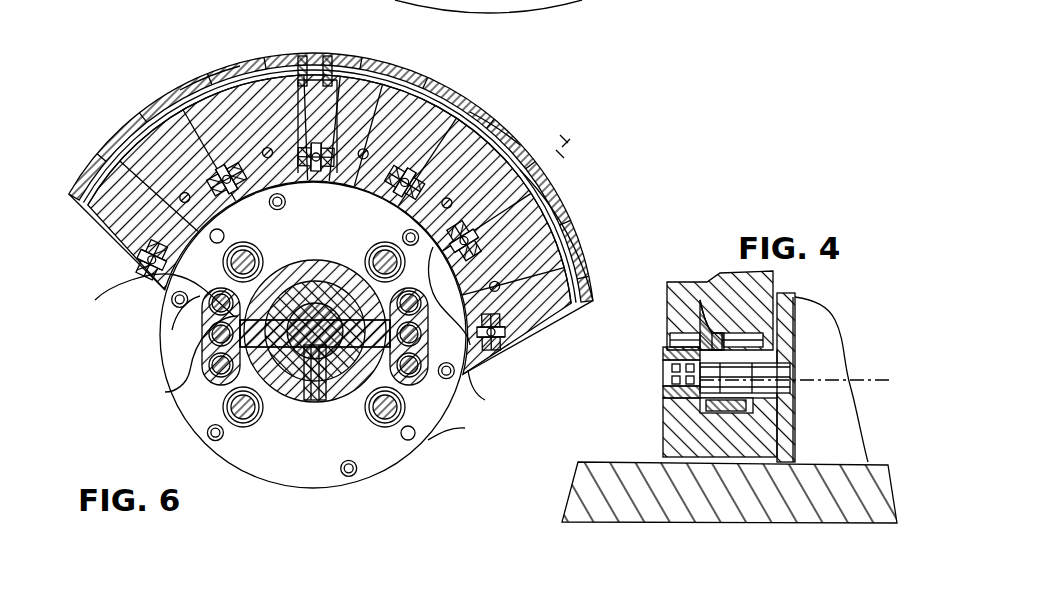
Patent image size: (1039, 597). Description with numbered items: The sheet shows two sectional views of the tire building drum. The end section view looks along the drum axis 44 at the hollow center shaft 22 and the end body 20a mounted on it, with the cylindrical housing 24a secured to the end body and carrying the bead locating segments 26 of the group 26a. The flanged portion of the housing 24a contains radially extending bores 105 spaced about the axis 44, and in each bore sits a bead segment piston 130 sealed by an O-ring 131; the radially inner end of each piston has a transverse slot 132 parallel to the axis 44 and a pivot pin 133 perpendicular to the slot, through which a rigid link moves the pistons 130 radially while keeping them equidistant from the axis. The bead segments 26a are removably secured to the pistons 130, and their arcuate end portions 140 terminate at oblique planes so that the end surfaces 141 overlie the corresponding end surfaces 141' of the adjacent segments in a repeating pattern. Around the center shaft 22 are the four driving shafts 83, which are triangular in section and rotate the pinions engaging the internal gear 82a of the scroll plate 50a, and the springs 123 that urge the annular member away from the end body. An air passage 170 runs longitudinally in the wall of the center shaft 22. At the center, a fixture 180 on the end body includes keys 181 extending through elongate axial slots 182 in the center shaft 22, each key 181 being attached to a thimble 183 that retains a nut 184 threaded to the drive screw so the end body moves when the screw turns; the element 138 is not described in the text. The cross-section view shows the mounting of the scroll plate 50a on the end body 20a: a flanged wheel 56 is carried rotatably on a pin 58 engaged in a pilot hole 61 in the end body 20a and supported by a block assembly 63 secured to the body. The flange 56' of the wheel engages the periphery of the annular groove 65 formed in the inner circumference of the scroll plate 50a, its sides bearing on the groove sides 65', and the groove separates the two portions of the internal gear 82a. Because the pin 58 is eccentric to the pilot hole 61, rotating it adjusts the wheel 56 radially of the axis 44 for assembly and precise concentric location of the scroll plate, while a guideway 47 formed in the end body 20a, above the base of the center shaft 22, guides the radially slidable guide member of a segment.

In FIG. 6, the end body 20a is at (187, 397).
In FIG. 4, the end body 20a is at (795, 417).
In FIG. 6, the center shaft 22 is at (282, 252).
In FIG. 4, the center shaft 22 is at (670, 507).
In FIG. 6, the cylindrical housing 24a is at (150, 182).
In FIG. 6, the bead locating segments 26 is at (555, 195).
In FIG. 6, the group of bead engaging and locating segments 26a is at (118, 165).
In FIG. 6, the drum axis 44 is at (313, 380).
In FIG. 4, the guideway 47 is at (842, 432).
In FIG. 4, the scroll plate 50a is at (758, 287).
In FIG. 4, the flanged wheel 56 is at (678, 286).
In FIG. 4, the flange 56' is at (666, 292).
In FIG. 4, the pin 58 is at (717, 373).
In FIG. 4, the pilot hole 61 is at (795, 338).
In FIG. 4, the block assembly 63 is at (753, 442).
In FIG. 4, the annular groove 65 is at (709, 278).
In FIG. 4, the sides of the groove 65' is at (752, 315).
In FIG. 4, the internal gear 82a is at (668, 343).
In FIG. 6, the driving shaft 83 is at (232, 268).
In FIG. 6, the radial bore 105 is at (102, 162).
In FIG. 6, the spring 123 is at (172, 304).
In FIG. 6, the bead segment piston 130 is at (172, 165).
In FIG. 6, the O-ring 131 is at (520, 145).
In FIG. 6, the transverse slot 132 is at (133, 235).
In FIG. 6, the pivot pin 133 is at (157, 263).
In FIG. 6, the bracket 138 is at (263, 296).
In FIG. 6, the arcuate end portion 140 is at (213, 80).
In FIG. 6, the end surface 141 is at (439, 92).
In FIG. 6, the end surface of adjacent segment 141' is at (405, 83).
In FIG. 6, the air passage 170 is at (315, 262).
In FIG. 6, the fixture 180 is at (210, 320).
In FIG. 6, the key 181 is at (215, 322).
In FIG. 6, the elongate axial slot 182 is at (283, 395).
In FIG. 6, the thimble 183 is at (311, 400).
In FIG. 6, the nut 184 is at (318, 400).